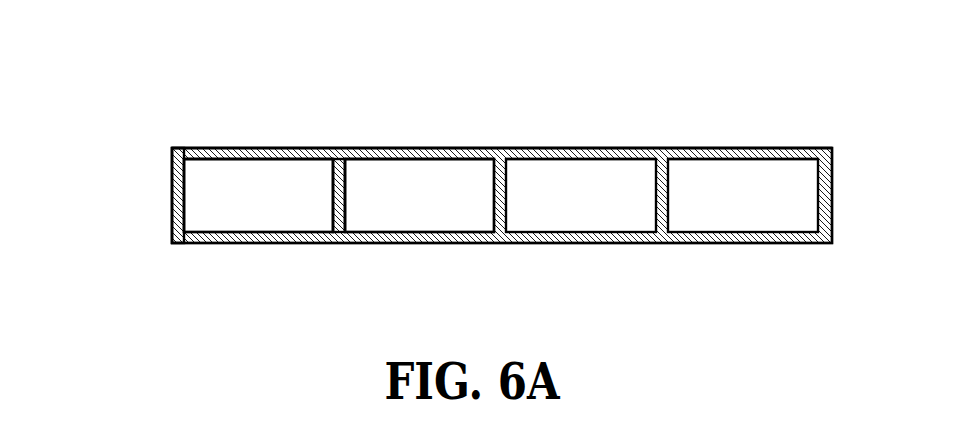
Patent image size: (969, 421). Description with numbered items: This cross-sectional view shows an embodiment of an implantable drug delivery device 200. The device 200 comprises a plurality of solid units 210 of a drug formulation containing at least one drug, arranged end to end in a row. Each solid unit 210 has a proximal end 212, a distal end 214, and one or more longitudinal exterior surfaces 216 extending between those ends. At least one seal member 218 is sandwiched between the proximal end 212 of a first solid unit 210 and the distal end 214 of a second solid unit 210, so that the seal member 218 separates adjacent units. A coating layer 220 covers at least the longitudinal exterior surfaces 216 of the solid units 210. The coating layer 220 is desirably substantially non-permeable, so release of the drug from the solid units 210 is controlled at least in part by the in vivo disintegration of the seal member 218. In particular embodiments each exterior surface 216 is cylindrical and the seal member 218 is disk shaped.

The device 200 is at (194, 99).
The solid unit 210 is at (239, 201).
The proximal end 212 is at (172, 202).
The distal end 214 is at (334, 206).
The longitudinal exterior surface 216 is at (294, 164).
The seal member 218 is at (339, 196).
The coating layer 220 is at (568, 148).